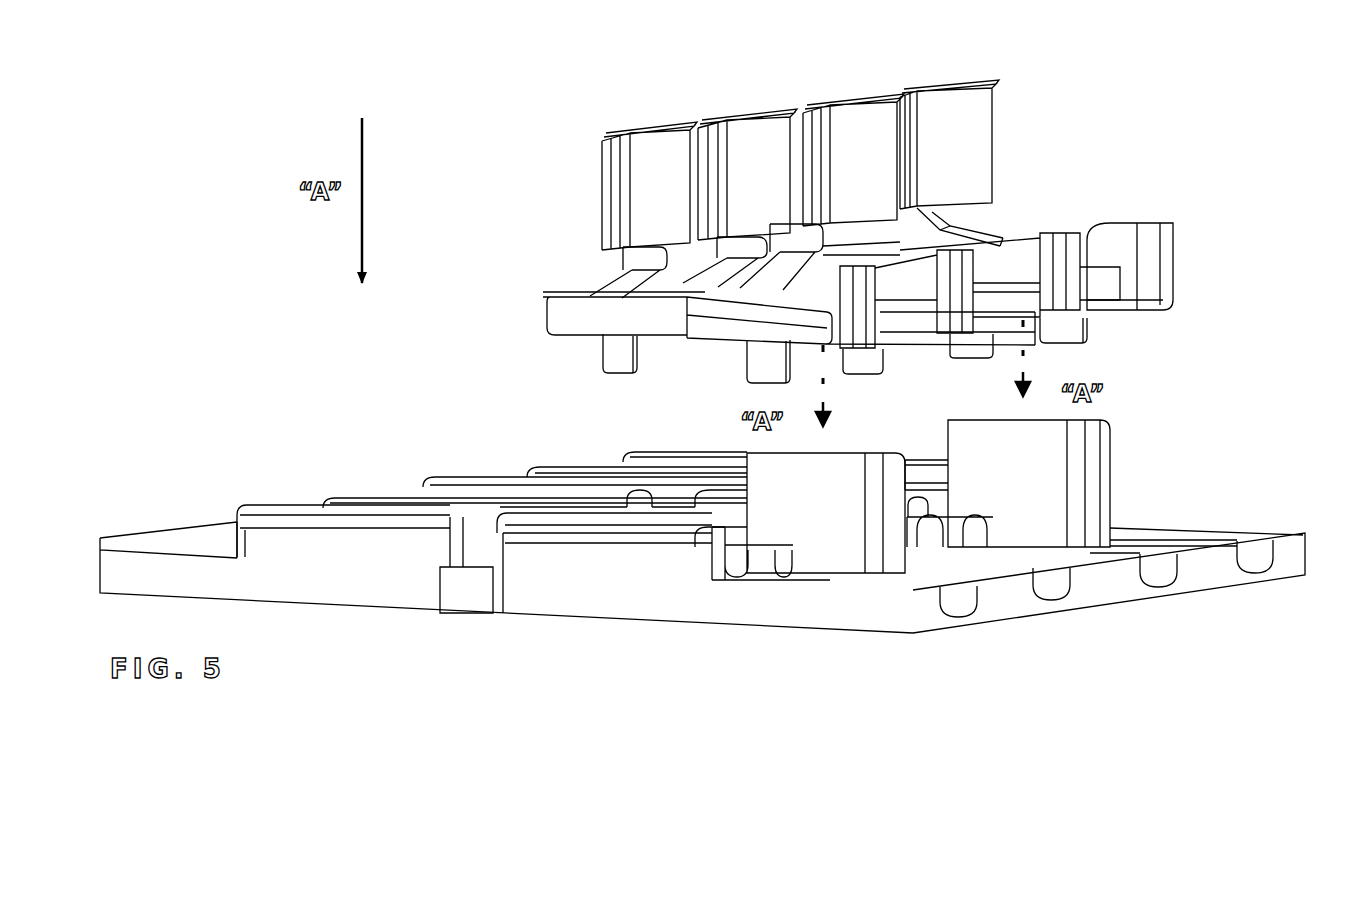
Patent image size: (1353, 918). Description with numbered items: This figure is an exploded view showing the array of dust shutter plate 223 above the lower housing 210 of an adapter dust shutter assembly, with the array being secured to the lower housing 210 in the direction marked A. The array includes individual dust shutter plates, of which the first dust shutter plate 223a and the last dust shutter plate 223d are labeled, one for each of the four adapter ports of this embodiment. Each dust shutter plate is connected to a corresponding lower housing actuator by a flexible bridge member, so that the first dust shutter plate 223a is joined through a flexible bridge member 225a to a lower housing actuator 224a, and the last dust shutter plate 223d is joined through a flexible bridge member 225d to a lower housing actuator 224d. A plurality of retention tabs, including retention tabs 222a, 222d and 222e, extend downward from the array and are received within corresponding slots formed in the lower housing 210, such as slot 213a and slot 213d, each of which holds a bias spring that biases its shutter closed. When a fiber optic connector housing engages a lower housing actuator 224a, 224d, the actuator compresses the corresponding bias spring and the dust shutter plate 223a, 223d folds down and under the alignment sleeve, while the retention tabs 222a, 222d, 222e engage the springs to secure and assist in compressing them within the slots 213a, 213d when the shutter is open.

The lower housing 210 is at (1003, 589).
The slot 213a is at (950, 592).
The slot 213d is at (1252, 553).
The retention tab 222a is at (770, 352).
The retention tab 222d is at (1067, 318).
The retention tab 222e is at (617, 352).
The array of dust shutter plate 223 is at (592, 171).
The dust shutter plate 223a is at (645, 198).
The dust shutter plate 223d is at (968, 136).
The lower housing actuator 224a is at (866, 316).
The lower housing actuator 224d is at (1163, 258).
The flexible bridge member 225a is at (642, 268).
The flexible bridge member 225d is at (935, 226).